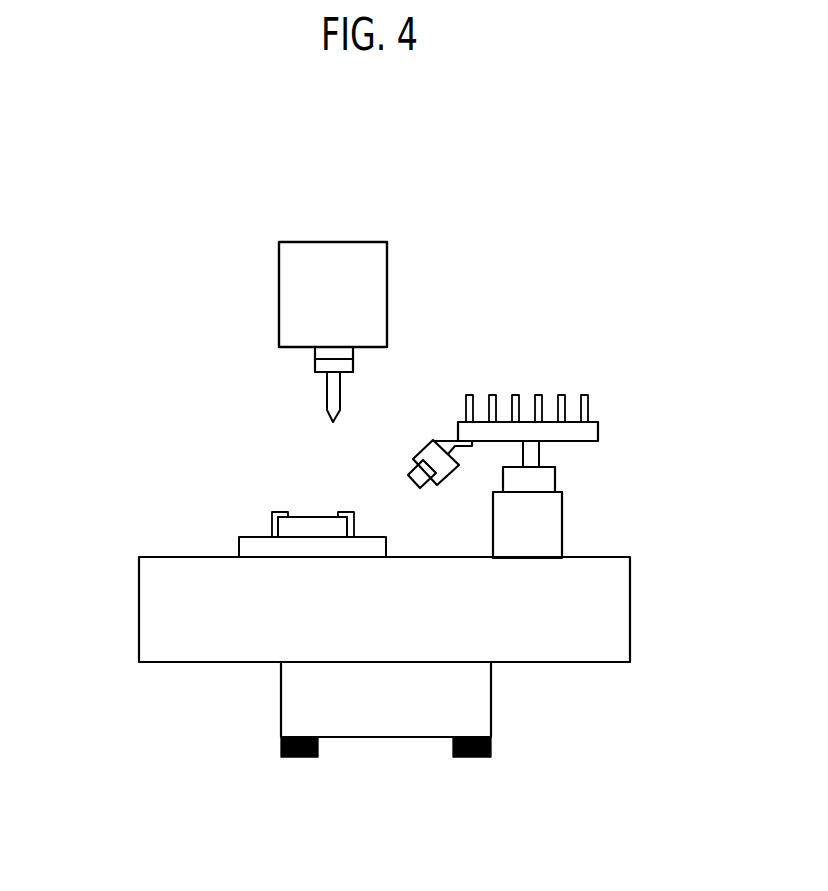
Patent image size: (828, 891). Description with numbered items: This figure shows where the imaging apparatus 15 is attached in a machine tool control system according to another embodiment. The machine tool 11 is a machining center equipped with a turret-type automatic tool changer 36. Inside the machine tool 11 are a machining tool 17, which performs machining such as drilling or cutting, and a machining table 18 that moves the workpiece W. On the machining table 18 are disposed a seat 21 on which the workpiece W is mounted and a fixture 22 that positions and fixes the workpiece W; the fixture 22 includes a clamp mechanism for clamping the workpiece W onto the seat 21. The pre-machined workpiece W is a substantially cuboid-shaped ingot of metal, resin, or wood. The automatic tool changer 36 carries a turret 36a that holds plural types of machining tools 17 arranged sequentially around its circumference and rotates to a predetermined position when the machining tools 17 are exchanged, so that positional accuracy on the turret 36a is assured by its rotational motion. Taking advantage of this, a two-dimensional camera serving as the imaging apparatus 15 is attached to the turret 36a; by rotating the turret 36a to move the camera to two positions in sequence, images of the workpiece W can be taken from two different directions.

The machine tool 11 is at (153, 246).
The imaging apparatus 15 is at (428, 442).
The machining tool 17 is at (327, 403).
The machining table 18 is at (157, 622).
The seat 21 is at (247, 550).
The fixture 22 is at (272, 513).
The workpiece W is at (312, 525).
The automatic tool changer 36 is at (563, 520).
The turret 36a is at (590, 432).